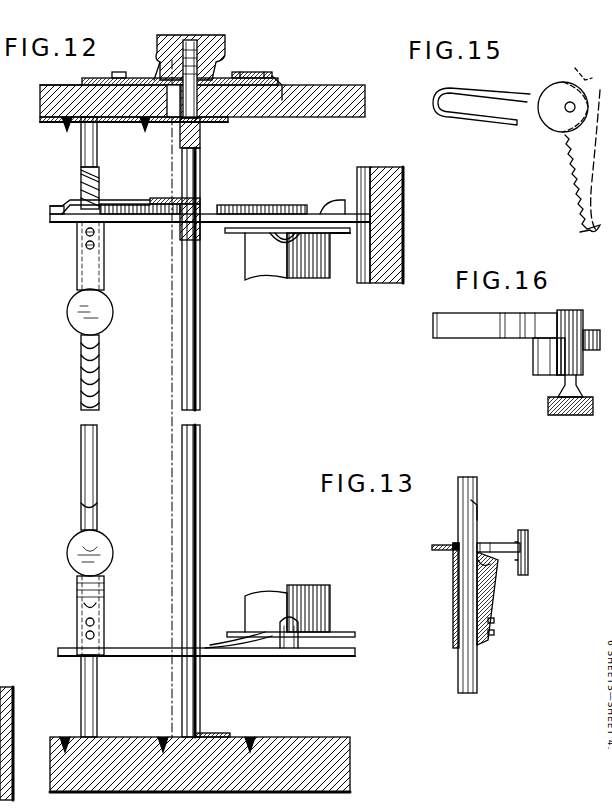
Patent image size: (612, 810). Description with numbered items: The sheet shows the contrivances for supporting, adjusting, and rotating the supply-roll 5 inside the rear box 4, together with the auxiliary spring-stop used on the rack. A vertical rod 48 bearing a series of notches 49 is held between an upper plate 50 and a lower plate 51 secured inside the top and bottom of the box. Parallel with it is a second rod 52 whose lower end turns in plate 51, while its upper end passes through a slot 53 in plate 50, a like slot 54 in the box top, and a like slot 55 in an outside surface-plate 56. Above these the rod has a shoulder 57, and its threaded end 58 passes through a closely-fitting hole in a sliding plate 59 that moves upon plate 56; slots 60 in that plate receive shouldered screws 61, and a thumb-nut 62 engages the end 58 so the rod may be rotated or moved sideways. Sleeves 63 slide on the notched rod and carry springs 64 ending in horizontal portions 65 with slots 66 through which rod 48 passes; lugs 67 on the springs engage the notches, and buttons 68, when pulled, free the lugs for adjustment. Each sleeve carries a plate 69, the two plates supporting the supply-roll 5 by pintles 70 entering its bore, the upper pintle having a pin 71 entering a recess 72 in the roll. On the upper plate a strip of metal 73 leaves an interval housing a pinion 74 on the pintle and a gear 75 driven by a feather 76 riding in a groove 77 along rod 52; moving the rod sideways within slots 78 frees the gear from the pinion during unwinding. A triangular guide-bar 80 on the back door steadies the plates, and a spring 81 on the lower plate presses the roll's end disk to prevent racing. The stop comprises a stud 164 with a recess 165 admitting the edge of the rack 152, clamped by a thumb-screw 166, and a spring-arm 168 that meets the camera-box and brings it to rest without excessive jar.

In FIG. 12, the rear box 4 is at (338, 80).
In FIG. 12, the supply-roll 5 is at (262, 280).
In FIG. 12, the vertical rod 48 is at (82, 152).
In FIG. 13, the vertical rod 48 is at (478, 485).
In FIG. 12, the notches 49 is at (80, 370).
In FIG. 13, the notches 49 is at (478, 505).
In FIG. 12, the plate 50 is at (226, 124).
In FIG. 12, the plate 51 is at (238, 737).
In FIG. 12, the second rod 52 is at (200, 330).
In FIG. 12, the slot 53 is at (166, 140).
In FIG. 12, the slot 54 is at (170, 105).
In FIG. 12, the slot 55 is at (185, 40).
In FIG. 12, the outside surface-plate 56 is at (82, 80).
In FIG. 12, the shoulder 57 is at (215, 75).
In FIG. 12, the threaded end 58 is at (200, 45).
In FIG. 12, the sliding plate 59 is at (280, 82).
In FIG. 12, the slots 60 is at (262, 78).
In FIG. 12, the shouldered screws 61 is at (150, 85).
In FIG. 12, the thumb-nut 62 is at (168, 58).
In FIG. 13, the sleeves 63 is at (454, 590).
In FIG. 12, the springs 64 is at (80, 274).
In FIG. 13, the springs 64 is at (492, 600).
In FIG. 13, the horizontal portions 65 is at (432, 548).
In FIG. 13, the slots 66 is at (450, 542).
In FIG. 13, the lugs 67 is at (487, 543).
In FIG. 12, the buttons 68 is at (69, 316).
In FIG. 13, the buttons 68 is at (528, 555).
In FIG. 12, the plate 69 is at (68, 224).
In FIG. 12, the pintles 70 is at (326, 210).
In FIG. 12, the transversely-projecting pin 71 is at (310, 278).
In FIG. 12, the recess 72 is at (295, 228).
In FIG. 12, the strip of metal 73 is at (68, 200).
In FIG. 12, the pinion 74 is at (286, 233).
In FIG. 12, the gear 75 is at (250, 204).
In FIG. 12, the feather 76 is at (200, 208).
In FIG. 12, the groove 77 is at (200, 140).
In FIG. 12, the slots 78 is at (170, 198).
In FIG. 12, the triangular guide-bar 80 is at (363, 284).
In FIG. 12, the spring 81 is at (262, 645).
In FIG. 15, the circular geared rack 152 is at (566, 228).
In FIG. 16, the circular geared rack 152 is at (553, 373).
In FIG. 15, the stud 164 is at (558, 85).
In FIG. 16, the stud 164 is at (566, 322).
In FIG. 16, the recess 165 is at (555, 348).
In FIG. 16, the thumb-screw 166 is at (570, 415).
In FIG. 15, the spring-arm 168 is at (505, 130).
In FIG. 16, the spring-arm 168 is at (450, 340).